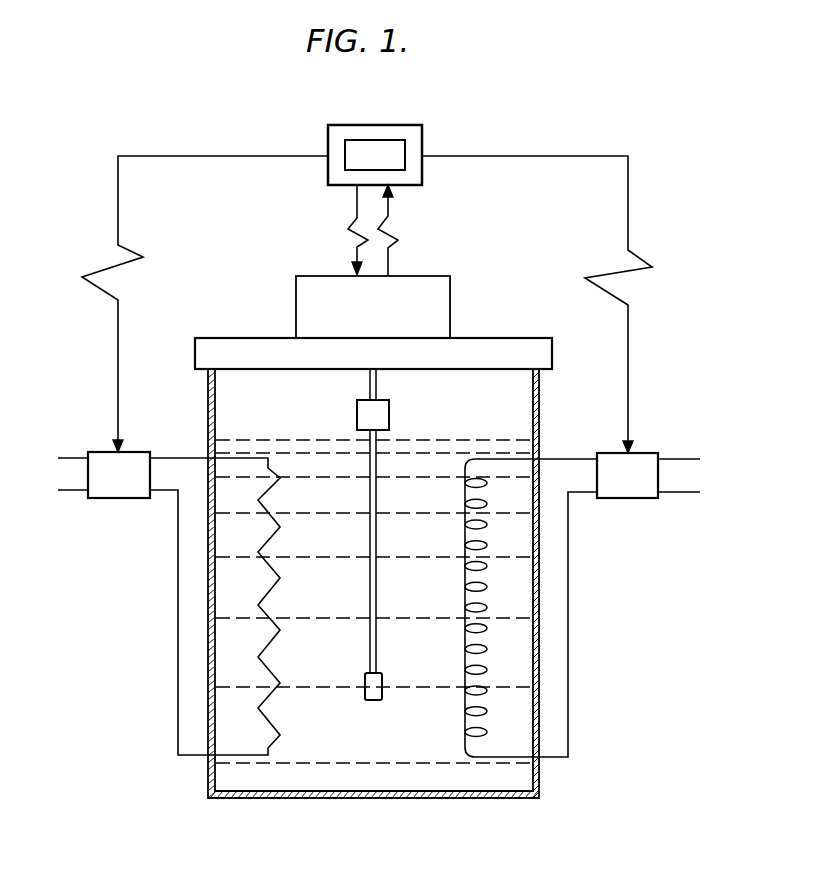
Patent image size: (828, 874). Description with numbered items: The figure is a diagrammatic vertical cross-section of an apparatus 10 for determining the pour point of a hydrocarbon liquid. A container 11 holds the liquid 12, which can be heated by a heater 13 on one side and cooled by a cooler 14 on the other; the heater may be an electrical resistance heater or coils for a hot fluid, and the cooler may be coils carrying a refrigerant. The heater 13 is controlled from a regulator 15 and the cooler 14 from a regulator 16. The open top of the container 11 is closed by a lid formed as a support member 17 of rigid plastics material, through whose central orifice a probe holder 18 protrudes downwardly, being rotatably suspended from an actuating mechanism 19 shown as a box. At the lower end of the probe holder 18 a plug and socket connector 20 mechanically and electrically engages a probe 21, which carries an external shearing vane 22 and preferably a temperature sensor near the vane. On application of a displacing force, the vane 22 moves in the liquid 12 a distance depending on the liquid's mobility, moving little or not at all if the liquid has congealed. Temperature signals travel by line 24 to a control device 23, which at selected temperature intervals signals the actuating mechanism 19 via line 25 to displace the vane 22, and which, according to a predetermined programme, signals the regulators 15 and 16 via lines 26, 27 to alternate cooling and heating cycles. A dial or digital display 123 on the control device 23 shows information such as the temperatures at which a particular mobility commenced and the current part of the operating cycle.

The apparatus 10 is at (656, 337).
The container 11 is at (540, 602).
The liquid 12 is at (336, 601).
The heater 13 is at (267, 645).
The cooler 14 is at (483, 658).
The regulator 15 is at (103, 499).
The regulator 16 is at (630, 499).
The support member 17 is at (520, 345).
The probe holder 18 is at (377, 380).
The actuating mechanism 19 is at (450, 297).
The plug and socket connector 20 is at (357, 415).
The probe 21 is at (371, 650).
The vane 22 is at (382, 693).
The control device 23 is at (423, 132).
The line 24 is at (388, 205).
The line 25 is at (357, 208).
The line 26 is at (118, 208).
The line 27 is at (628, 190).
The dial display 123 is at (365, 150).